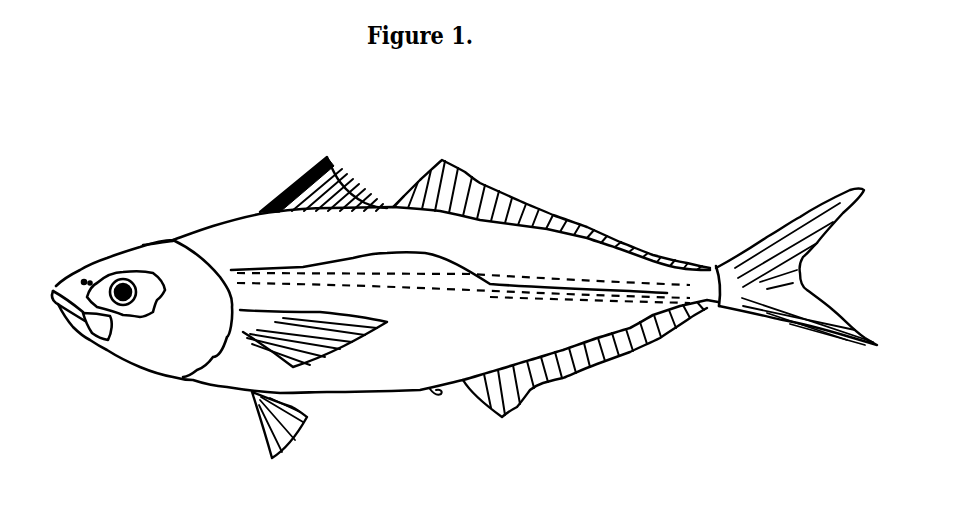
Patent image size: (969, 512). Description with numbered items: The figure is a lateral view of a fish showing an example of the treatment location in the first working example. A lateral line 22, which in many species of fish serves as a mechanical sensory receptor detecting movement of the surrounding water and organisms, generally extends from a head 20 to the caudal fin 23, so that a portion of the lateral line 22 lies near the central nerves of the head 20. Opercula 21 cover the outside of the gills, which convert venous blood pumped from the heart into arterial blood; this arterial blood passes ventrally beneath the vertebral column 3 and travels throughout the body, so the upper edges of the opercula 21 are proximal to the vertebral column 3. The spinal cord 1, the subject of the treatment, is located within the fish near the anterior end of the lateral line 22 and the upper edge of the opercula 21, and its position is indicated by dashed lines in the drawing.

The spinal cord 1 is at (417, 280).
The vertebral column 3 is at (462, 286).
The head 20 is at (178, 246).
The opercula 21 is at (207, 342).
The lateral line 22 is at (393, 252).
The caudal fin 23 is at (770, 245).